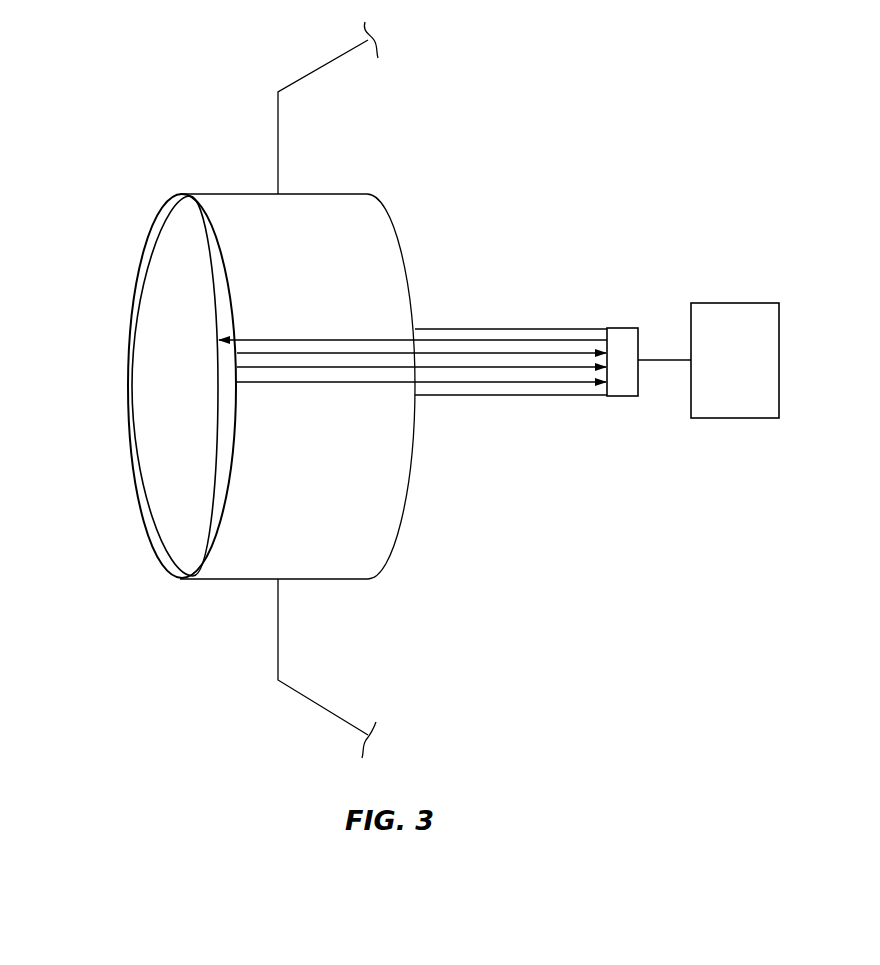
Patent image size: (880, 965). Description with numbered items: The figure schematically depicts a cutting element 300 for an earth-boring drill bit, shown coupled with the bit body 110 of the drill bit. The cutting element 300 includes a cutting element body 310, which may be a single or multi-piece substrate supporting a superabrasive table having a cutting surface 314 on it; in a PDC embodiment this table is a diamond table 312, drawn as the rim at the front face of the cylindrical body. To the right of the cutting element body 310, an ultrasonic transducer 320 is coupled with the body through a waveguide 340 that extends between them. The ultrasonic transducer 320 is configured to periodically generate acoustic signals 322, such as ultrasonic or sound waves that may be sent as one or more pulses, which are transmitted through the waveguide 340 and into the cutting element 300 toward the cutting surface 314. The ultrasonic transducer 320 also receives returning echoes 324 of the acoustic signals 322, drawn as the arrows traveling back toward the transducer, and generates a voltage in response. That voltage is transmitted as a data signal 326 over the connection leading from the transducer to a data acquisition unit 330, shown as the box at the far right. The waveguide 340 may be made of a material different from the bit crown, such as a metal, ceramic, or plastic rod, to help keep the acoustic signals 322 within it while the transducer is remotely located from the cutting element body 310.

The bit body 110 is at (312, 70).
The cutting element 300 is at (199, 148).
The cutting element body 310 is at (310, 580).
The diamond table 312 is at (180, 578).
The cutting surface 314 is at (162, 348).
The ultrasonic transducer 320 is at (620, 327).
The acoustic signals 322 is at (275, 337).
The returning echoes 324 is at (281, 384).
The data signal 326 is at (668, 363).
The data acquisition unit 330 is at (735, 360).
The optical conduit 340 is at (517, 327).